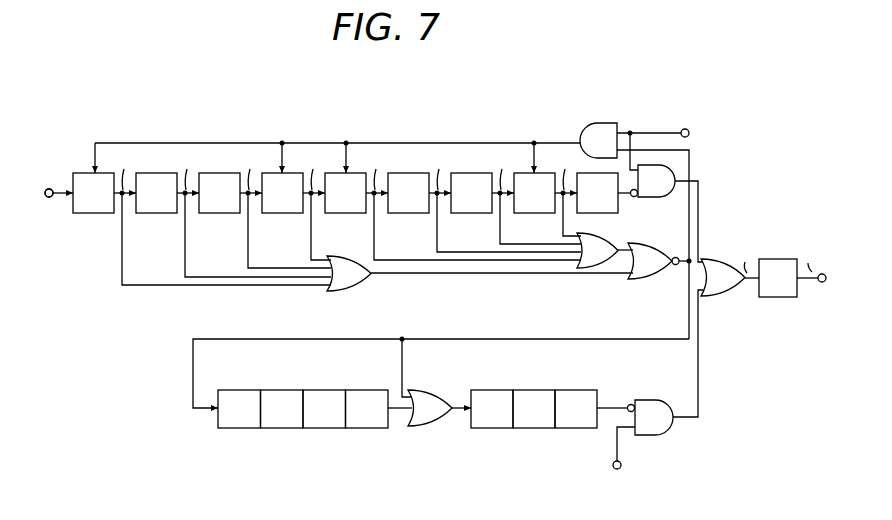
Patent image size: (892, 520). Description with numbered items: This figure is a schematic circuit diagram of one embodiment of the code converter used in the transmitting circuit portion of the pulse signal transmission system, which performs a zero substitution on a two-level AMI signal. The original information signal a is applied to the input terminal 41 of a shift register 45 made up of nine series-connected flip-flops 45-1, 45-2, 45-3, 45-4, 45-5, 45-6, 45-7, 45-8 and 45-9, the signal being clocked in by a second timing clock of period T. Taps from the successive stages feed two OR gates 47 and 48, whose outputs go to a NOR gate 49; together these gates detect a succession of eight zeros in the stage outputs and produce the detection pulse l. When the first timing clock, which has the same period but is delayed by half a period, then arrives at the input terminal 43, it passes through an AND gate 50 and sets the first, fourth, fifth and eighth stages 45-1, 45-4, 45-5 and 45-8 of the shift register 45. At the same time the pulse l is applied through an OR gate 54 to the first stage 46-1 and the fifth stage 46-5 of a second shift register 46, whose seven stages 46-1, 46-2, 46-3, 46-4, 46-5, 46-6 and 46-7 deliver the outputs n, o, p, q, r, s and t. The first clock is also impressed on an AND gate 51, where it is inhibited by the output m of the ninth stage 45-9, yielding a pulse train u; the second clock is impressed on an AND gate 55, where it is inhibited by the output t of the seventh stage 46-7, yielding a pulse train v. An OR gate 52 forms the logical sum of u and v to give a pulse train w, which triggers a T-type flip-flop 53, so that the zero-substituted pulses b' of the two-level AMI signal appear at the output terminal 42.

The input terminal 41 is at (49, 197).
The output terminal 42 is at (822, 282).
The input terminal 43 is at (685, 129).
The shift register 45 is at (577, 119).
The flip-flop 45-1 is at (93, 213).
The flip-flop 45-2 is at (156, 213).
The flip-flop 45-3 is at (219, 213).
The flip-flop 45-4 is at (282, 213).
The flip-flop 45-5 is at (345, 213).
The flip-flop 45-6 is at (408, 213).
The flip-flop 45-7 is at (471, 213).
The flip-flop 45-8 is at (534, 213).
The flip-flop 45-9 is at (598, 213).
The shift register 46 is at (598, 457).
The first stage 46-1 is at (240, 388).
The flip-flop 46-2 is at (280, 388).
The flip-flop 46-3 is at (327, 388).
The flip-flop 46-4 is at (377, 388).
The fifth stage 46-5 is at (492, 389).
The flip-flop 46-6 is at (533, 389).
The seventh stage 46-7 is at (577, 389).
The OR gate 47 is at (345, 291).
The OR gate 48 is at (590, 268).
The NOR gate 49 is at (648, 279).
The AND gate 50 is at (600, 122).
The AND gate 51 is at (672, 166).
The OR gate 52 is at (720, 296).
The T-type flip-flop 53 is at (777, 297).
The OR gate 54 is at (427, 426).
The AND gate 55 is at (650, 400).